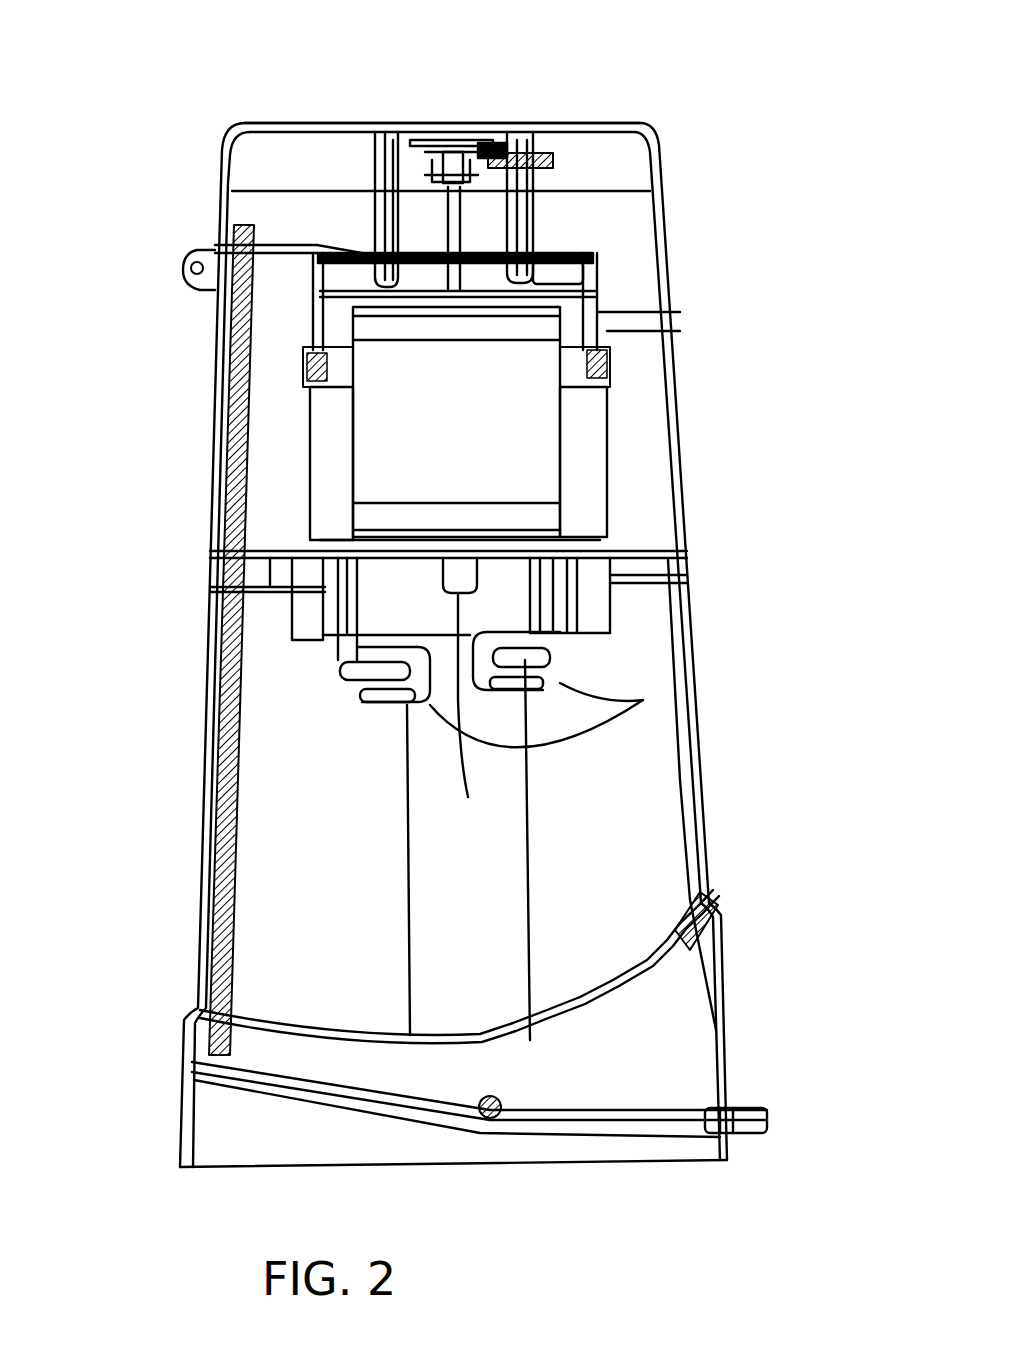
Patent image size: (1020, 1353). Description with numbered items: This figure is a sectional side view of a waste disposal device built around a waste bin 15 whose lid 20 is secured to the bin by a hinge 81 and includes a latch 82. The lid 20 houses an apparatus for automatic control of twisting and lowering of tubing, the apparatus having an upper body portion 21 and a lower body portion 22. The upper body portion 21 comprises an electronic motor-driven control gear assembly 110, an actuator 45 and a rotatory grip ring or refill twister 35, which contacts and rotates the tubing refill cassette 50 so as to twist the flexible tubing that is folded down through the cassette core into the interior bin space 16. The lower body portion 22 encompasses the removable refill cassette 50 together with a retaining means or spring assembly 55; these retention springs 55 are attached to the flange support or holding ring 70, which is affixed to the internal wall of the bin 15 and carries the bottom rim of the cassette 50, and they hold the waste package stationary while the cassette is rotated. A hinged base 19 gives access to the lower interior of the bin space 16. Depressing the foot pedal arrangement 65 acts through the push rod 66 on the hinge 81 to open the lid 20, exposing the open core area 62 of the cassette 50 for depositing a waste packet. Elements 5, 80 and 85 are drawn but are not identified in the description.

The bearing assembly 5 is at (457, 127).
The waste bin 15 is at (207, 782).
The interior bin space 16 is at (320, 827).
The hinged base 19 is at (618, 1150).
The lid portion 20 is at (237, 172).
The upper body portion 21 is at (362, 208).
The lower body portion 22 is at (623, 612).
The rotatory grip ring or refill twister 35 is at (345, 300).
The actuator 45 is at (485, 128).
The tubing refill cassette 50 is at (550, 432).
The retaining means or spring assembly 55 is at (643, 700).
The open core area 62 is at (470, 790).
The foot pedal arrangement 65 is at (753, 1098).
The push rod 66 is at (222, 937).
The flange support or holding ring 70 is at (262, 597).
The inner wall 80 is at (310, 453).
The hinge 81 is at (183, 278).
The latch 82 is at (300, 222).
The hatched block 85 is at (538, 150).
The electronic motor-driven control gear assembly 110 is at (537, 232).